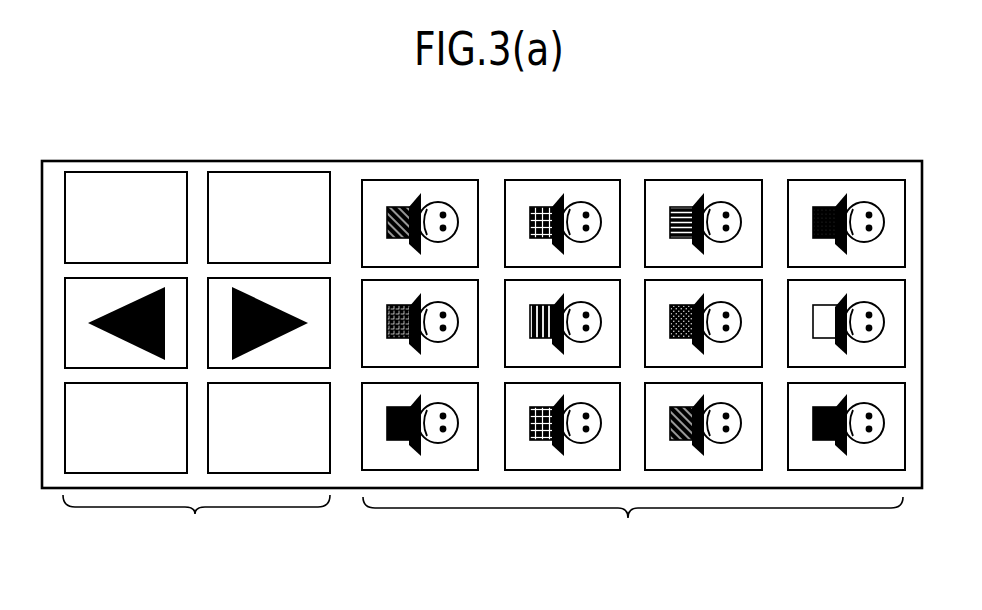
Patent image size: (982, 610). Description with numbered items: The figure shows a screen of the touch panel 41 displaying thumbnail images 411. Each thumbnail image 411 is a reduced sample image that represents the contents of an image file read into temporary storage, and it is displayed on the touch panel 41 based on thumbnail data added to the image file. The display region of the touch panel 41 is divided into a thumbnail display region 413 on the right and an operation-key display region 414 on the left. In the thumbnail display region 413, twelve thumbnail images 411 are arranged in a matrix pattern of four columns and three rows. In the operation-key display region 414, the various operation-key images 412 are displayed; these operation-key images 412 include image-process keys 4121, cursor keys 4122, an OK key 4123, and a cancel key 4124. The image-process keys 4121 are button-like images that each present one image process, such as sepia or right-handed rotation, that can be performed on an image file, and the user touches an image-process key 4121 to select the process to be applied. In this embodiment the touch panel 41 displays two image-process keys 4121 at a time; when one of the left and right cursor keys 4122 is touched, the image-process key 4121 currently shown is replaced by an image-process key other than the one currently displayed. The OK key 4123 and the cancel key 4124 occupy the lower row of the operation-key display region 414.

The touch panel 41 is at (851, 141).
The thumbnail image 411 is at (513, 403).
The operation-key image 412 is at (245, 343).
The image-process key 4121 is at (165, 183).
The cursor key 4122 is at (168, 350).
The OK key 4123 is at (323, 448).
The cancel key 4124 is at (72, 448).
The thumbnail display region 413 is at (633, 525).
The operation-key display region 414 is at (196, 522).